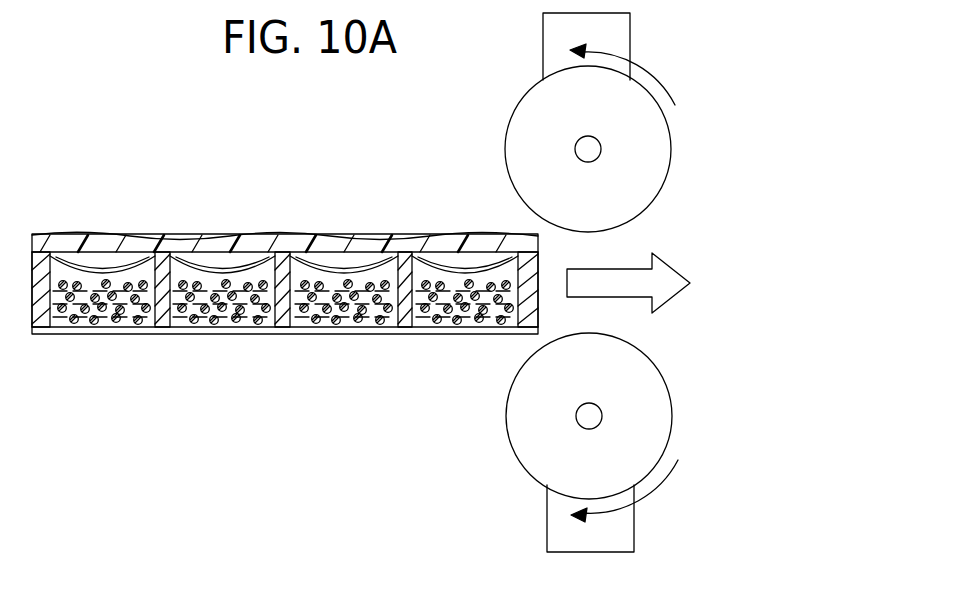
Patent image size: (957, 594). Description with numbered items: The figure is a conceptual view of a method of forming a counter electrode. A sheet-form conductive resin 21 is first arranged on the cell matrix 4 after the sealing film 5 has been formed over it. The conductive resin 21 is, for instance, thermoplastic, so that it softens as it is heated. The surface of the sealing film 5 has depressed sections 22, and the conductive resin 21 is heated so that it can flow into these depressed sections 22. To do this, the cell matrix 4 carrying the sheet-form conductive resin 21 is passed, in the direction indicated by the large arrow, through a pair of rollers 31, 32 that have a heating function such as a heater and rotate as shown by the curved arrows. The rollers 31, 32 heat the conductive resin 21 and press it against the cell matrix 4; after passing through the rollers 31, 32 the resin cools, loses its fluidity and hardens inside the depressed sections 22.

The cell matrix 4 is at (285, 279).
The sealing film 5 is at (330, 268).
The sheet-form conductive resin 21 is at (380, 248).
The depressed sections 22 is at (228, 258).
The roller 31 is at (658, 152).
The roller 32 is at (660, 416).